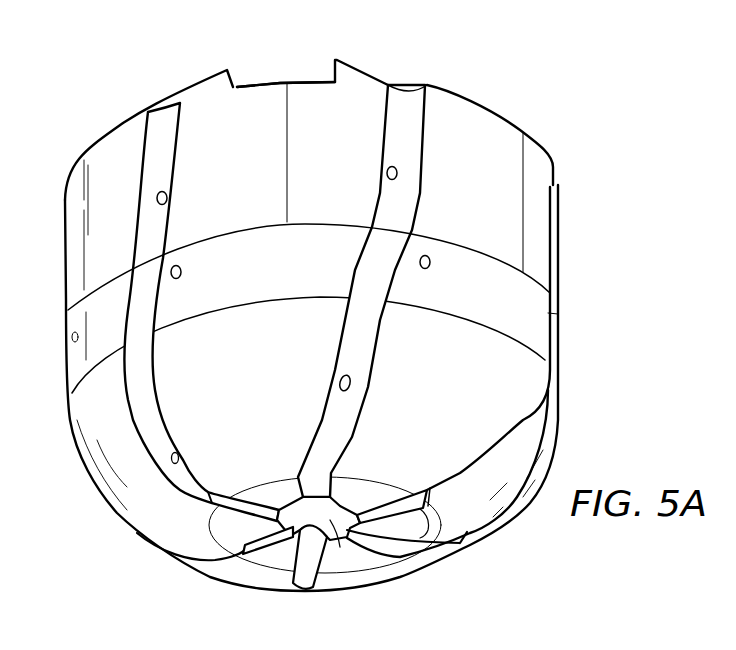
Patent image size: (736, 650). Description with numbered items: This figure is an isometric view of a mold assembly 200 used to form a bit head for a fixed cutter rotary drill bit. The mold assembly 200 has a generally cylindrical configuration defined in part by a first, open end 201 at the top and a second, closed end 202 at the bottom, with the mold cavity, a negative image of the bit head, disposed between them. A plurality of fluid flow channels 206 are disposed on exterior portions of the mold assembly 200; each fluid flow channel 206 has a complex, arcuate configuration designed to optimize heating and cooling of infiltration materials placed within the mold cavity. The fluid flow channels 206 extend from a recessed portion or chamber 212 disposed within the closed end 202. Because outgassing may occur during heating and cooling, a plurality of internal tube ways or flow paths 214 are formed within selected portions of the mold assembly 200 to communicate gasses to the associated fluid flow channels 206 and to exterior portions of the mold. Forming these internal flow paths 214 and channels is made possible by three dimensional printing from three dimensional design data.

The mold assembly 200 is at (380, 328).
The first, open end 201 is at (314, 80).
The second, closed end 202 is at (447, 467).
The fluid flow channel 206 is at (160, 150).
The recessed portion or chamber 212 is at (327, 580).
The internal tube way or flow path 214 is at (154, 197).